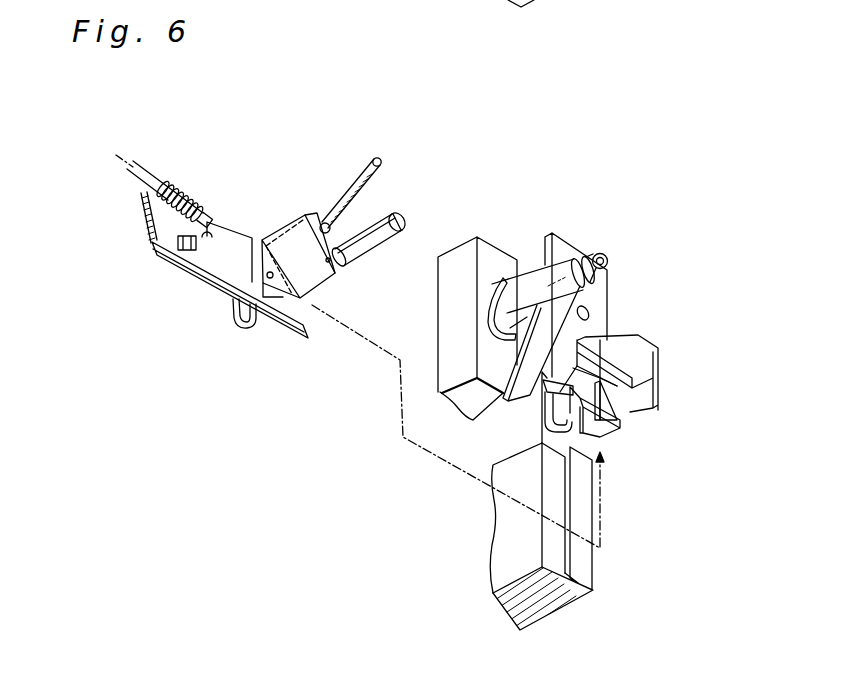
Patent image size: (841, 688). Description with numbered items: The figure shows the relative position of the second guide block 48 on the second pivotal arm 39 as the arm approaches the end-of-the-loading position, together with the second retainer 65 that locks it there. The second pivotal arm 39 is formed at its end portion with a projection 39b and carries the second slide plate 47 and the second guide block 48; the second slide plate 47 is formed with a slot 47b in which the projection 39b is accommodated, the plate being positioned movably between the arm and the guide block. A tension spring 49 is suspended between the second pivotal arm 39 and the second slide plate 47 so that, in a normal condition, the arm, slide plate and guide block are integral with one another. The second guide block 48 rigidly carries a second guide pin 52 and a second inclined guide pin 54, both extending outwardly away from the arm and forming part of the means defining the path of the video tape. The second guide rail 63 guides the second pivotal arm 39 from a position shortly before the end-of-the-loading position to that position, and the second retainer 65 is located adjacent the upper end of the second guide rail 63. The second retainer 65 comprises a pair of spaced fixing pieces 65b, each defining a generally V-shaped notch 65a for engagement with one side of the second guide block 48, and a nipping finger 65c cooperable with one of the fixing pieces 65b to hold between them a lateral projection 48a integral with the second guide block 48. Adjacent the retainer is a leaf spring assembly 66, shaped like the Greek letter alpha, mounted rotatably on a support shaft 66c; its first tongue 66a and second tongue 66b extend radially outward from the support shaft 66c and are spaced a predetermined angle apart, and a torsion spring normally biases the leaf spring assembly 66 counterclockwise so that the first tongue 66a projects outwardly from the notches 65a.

The second pivotal arm 39 is at (160, 260).
The projection 39b is at (216, 243).
The second slide plate 47 is at (234, 245).
The slot 47b is at (206, 250).
The second guide block 48 is at (291, 216).
The lateral projection 48a is at (290, 303).
The tension spring 49 is at (190, 203).
The second guide pin 52 is at (378, 218).
The second inclined guide pin 54 is at (358, 173).
The second guide rail 63 is at (600, 568).
The second retainer 65 is at (613, 290).
The V-shaped notch 65a is at (638, 387).
The fixing piece 65b is at (616, 383).
The nipping finger 65c is at (608, 441).
The leaf spring assembly 66 is at (529, 292).
The first tongue 66a is at (535, 400).
The second tongue 66b is at (520, 375).
The support shaft 66c is at (604, 256).